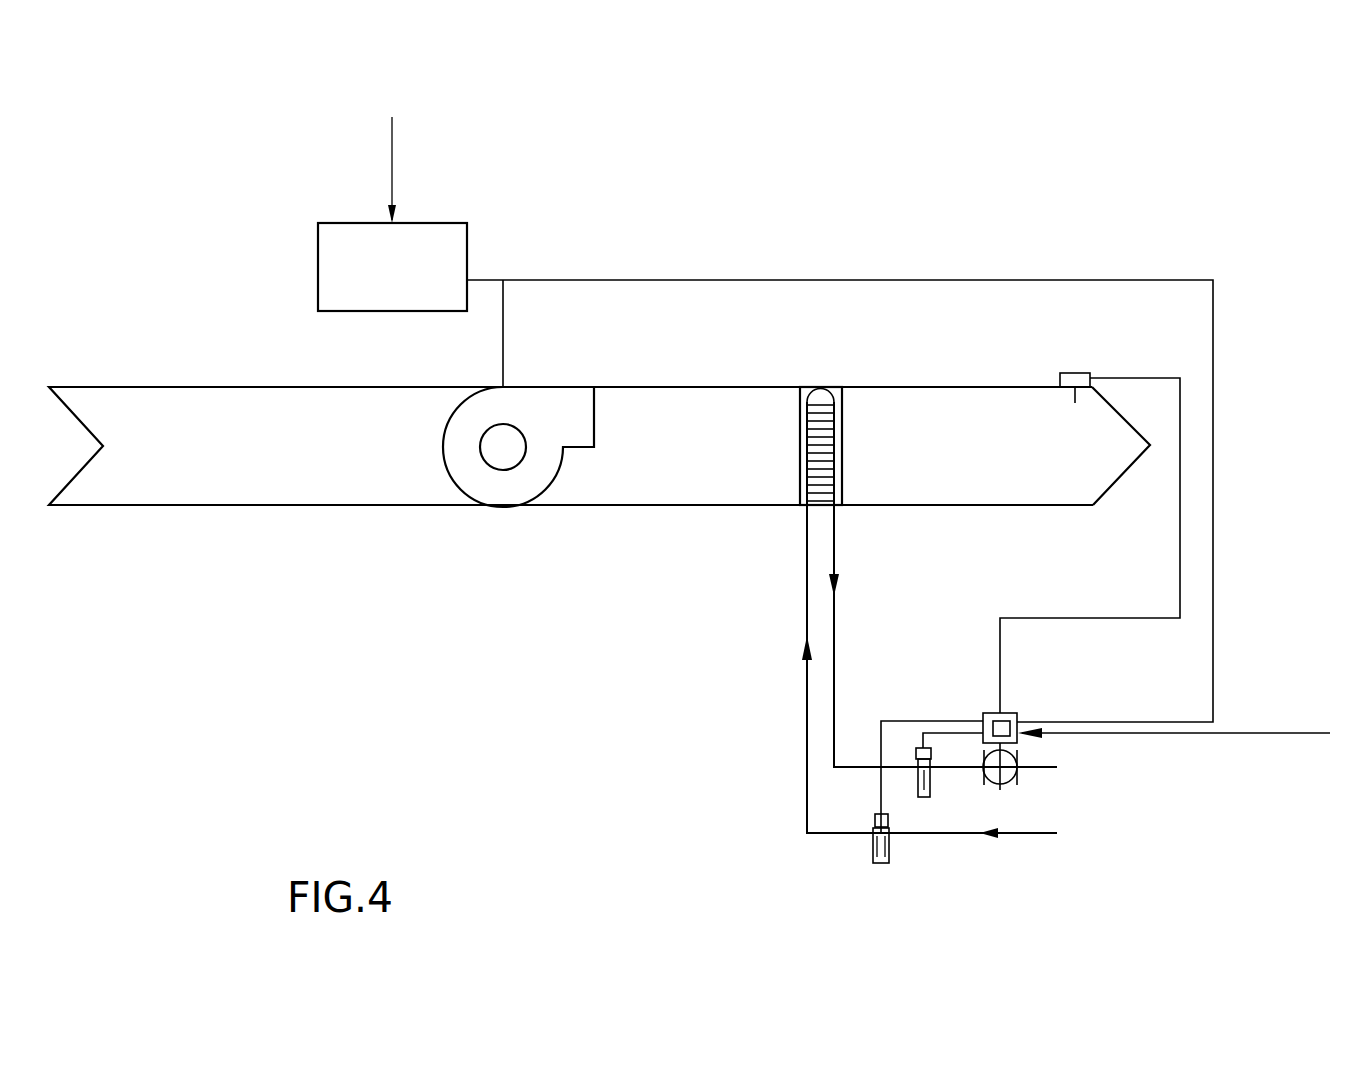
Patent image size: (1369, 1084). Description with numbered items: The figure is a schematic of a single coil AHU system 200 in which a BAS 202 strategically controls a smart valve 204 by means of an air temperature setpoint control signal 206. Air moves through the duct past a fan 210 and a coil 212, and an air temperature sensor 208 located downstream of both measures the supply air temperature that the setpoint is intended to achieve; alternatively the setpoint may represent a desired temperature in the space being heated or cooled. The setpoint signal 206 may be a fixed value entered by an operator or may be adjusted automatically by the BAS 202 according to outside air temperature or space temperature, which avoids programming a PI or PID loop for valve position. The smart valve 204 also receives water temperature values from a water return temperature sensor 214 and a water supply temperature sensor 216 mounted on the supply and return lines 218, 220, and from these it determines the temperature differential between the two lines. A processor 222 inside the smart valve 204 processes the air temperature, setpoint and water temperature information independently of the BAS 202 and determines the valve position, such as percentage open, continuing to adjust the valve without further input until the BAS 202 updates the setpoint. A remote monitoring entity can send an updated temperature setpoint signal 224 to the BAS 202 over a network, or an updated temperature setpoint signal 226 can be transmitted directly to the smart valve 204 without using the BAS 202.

The single coil AHU system 200 is at (1098, 166).
The BAS 202 is at (318, 265).
The smart valve 204 is at (1030, 693).
The air temperature setpoint control signal 206 is at (1213, 475).
The air temperature sensor 208 is at (1075, 372).
The fan 210 is at (455, 478).
The coil 212 is at (815, 375).
The water return temperature sensor 214 is at (932, 780).
The water supply temperature sensor 216 is at (872, 843).
The supply line 218 is at (808, 743).
The return line 220 is at (833, 652).
The processor 222 is at (1013, 718).
The updated temperature setpoint signal 224 is at (391, 147).
The updated temperature setpoint signal 226 is at (1250, 735).